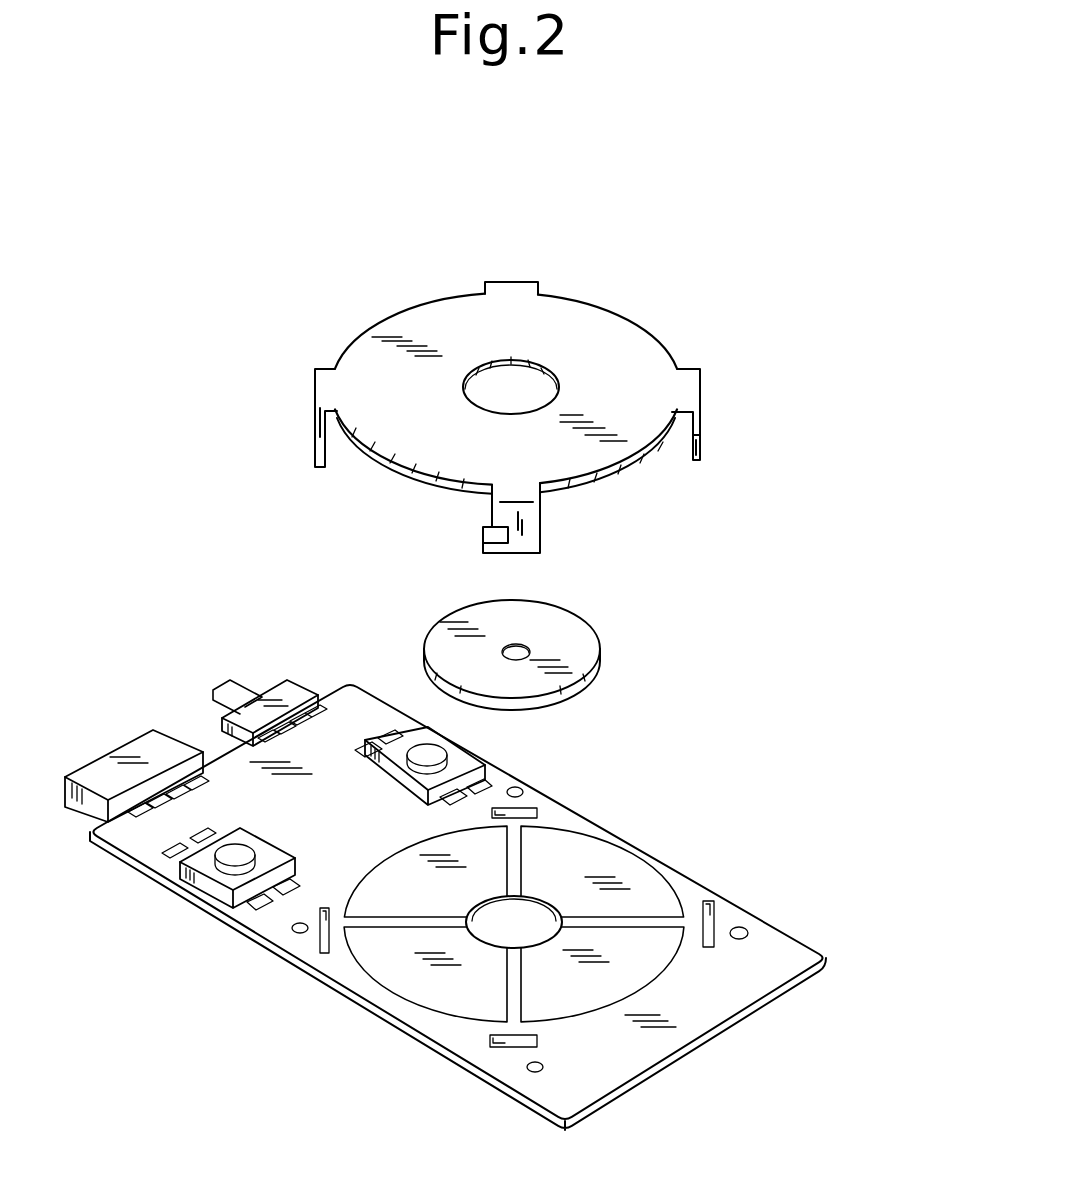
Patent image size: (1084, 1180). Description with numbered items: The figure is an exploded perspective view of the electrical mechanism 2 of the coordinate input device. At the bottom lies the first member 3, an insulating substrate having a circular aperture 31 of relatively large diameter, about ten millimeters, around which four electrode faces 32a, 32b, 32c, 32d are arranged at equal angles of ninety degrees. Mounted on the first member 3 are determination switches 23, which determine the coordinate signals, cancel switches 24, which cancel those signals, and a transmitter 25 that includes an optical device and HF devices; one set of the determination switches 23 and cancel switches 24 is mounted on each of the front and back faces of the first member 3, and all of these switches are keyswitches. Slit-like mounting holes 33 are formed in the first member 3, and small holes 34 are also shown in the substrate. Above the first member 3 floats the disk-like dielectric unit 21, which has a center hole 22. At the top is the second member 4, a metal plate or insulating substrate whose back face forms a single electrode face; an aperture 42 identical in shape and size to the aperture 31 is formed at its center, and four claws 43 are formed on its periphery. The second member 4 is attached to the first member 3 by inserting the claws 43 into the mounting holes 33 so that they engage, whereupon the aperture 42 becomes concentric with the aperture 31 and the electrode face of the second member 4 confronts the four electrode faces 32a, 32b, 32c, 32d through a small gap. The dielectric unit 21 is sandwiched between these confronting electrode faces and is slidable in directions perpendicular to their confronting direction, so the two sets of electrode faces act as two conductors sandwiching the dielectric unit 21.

The electrical mechanism 2 is at (797, 583).
The first member 3 is at (752, 905).
The second member 4 is at (607, 305).
The dielectric unit 21 is at (600, 661).
The center hole 22 is at (518, 648).
The determination switches 23 is at (197, 880).
The cancel switches 24 is at (470, 748).
The transmitter 25 is at (250, 690).
The circular aperture 31 is at (530, 910).
The electrode face 32a is at (655, 873).
The electrode face 32b is at (395, 975).
The electrode face 32c is at (375, 870).
The electrode face 32d is at (715, 1030).
The mounting holes 33 is at (500, 810).
The hole 34 is at (522, 790).
The aperture 42 is at (498, 380).
The claws 43 is at (517, 282).